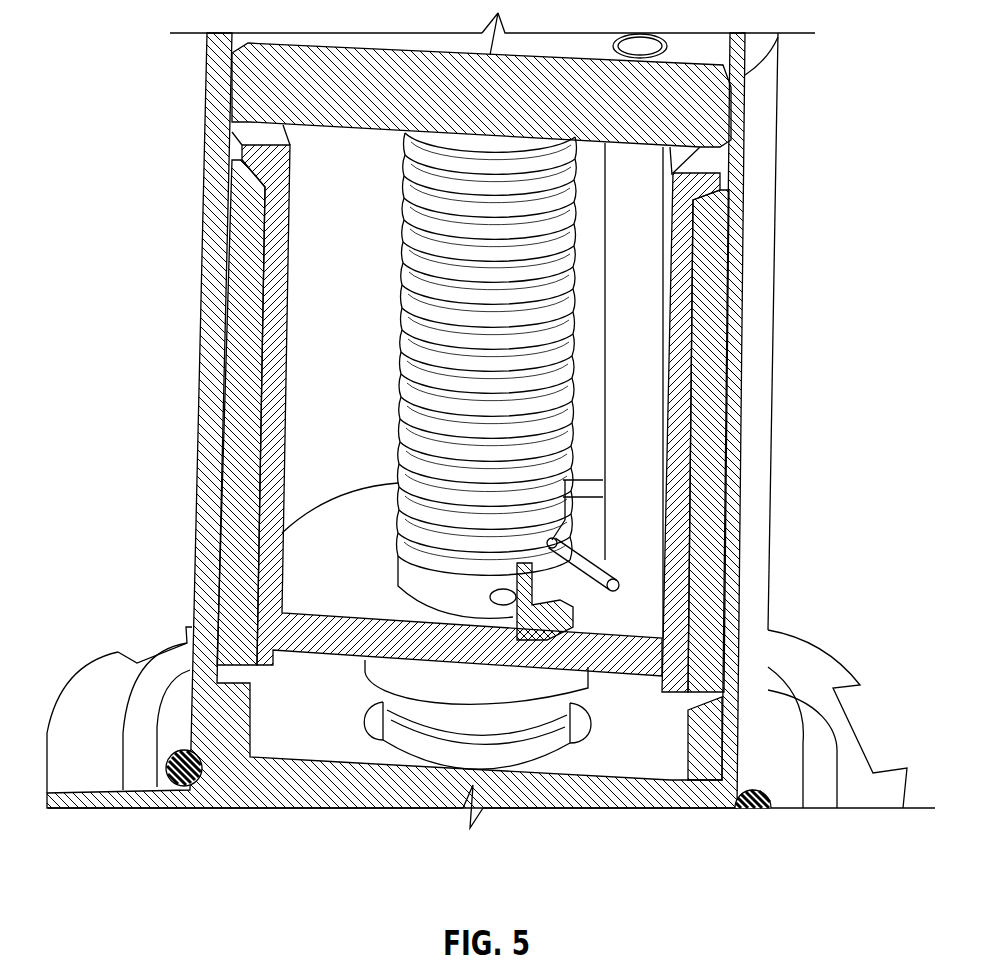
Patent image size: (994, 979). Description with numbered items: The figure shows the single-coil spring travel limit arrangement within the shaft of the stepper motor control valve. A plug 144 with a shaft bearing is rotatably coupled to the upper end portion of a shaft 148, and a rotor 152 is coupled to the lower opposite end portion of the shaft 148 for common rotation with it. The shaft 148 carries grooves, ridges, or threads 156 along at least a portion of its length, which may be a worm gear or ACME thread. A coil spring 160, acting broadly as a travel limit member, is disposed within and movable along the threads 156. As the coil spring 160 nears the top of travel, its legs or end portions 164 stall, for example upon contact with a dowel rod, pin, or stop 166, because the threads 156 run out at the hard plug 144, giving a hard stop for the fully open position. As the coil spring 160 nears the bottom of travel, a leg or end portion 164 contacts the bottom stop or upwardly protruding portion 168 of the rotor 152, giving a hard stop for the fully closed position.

The plug 144 is at (713, 100).
The shaft 148 is at (442, 270).
The rotor 152 is at (320, 650).
The threads 156 is at (447, 425).
The coil spring 160 is at (550, 508).
The legs or end portions 164 is at (612, 588).
The dowel rod, pin, or stop 166 is at (650, 340).
The bottom stop or upwardly protruding portion 168 is at (517, 563).